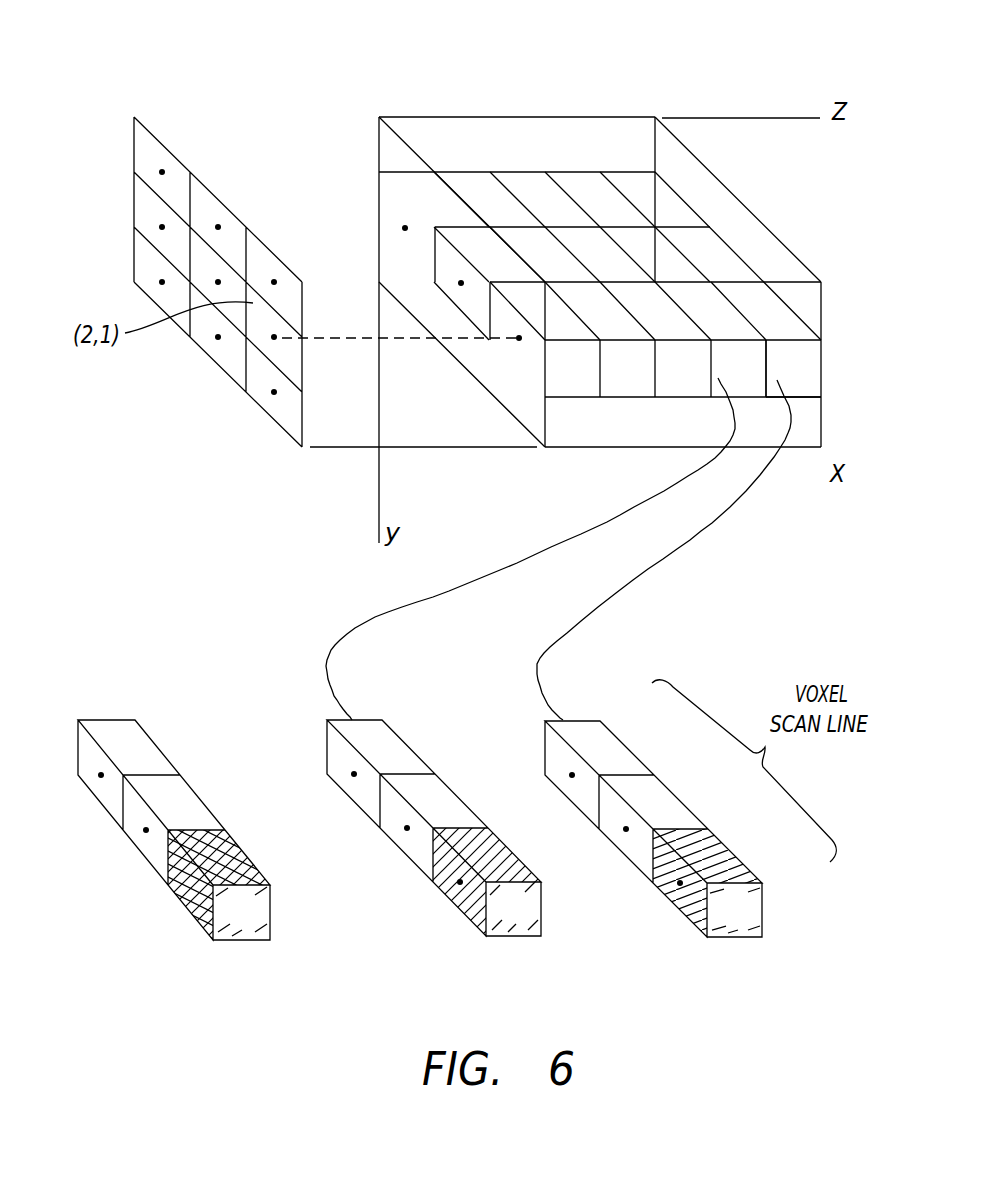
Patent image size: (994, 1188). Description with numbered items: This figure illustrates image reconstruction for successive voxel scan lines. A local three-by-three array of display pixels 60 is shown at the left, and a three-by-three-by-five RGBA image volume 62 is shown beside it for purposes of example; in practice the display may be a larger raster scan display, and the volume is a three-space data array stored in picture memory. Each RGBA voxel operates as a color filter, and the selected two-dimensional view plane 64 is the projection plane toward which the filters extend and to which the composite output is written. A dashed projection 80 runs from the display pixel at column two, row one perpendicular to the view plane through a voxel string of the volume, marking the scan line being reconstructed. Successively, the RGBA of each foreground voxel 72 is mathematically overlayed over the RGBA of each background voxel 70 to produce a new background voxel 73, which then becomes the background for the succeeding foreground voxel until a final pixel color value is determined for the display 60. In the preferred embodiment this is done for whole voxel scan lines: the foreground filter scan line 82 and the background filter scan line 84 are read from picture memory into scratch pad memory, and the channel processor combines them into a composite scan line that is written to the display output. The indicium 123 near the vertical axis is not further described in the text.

The array of display pixels 60 is at (141, 152).
The image volume 62 is at (573, 104).
The selected projection plane of view 64 is at (388, 152).
The background voxel 70 is at (743, 860).
The foreground voxel 72 is at (520, 863).
The new background filter voxel 73 is at (255, 863).
The ray through pixel (2,1) 80 is at (278, 363).
The foreground filter scan line 82 is at (530, 689).
The background filter scan line 84 is at (712, 666).
The scan line index 123 is at (296, 584).